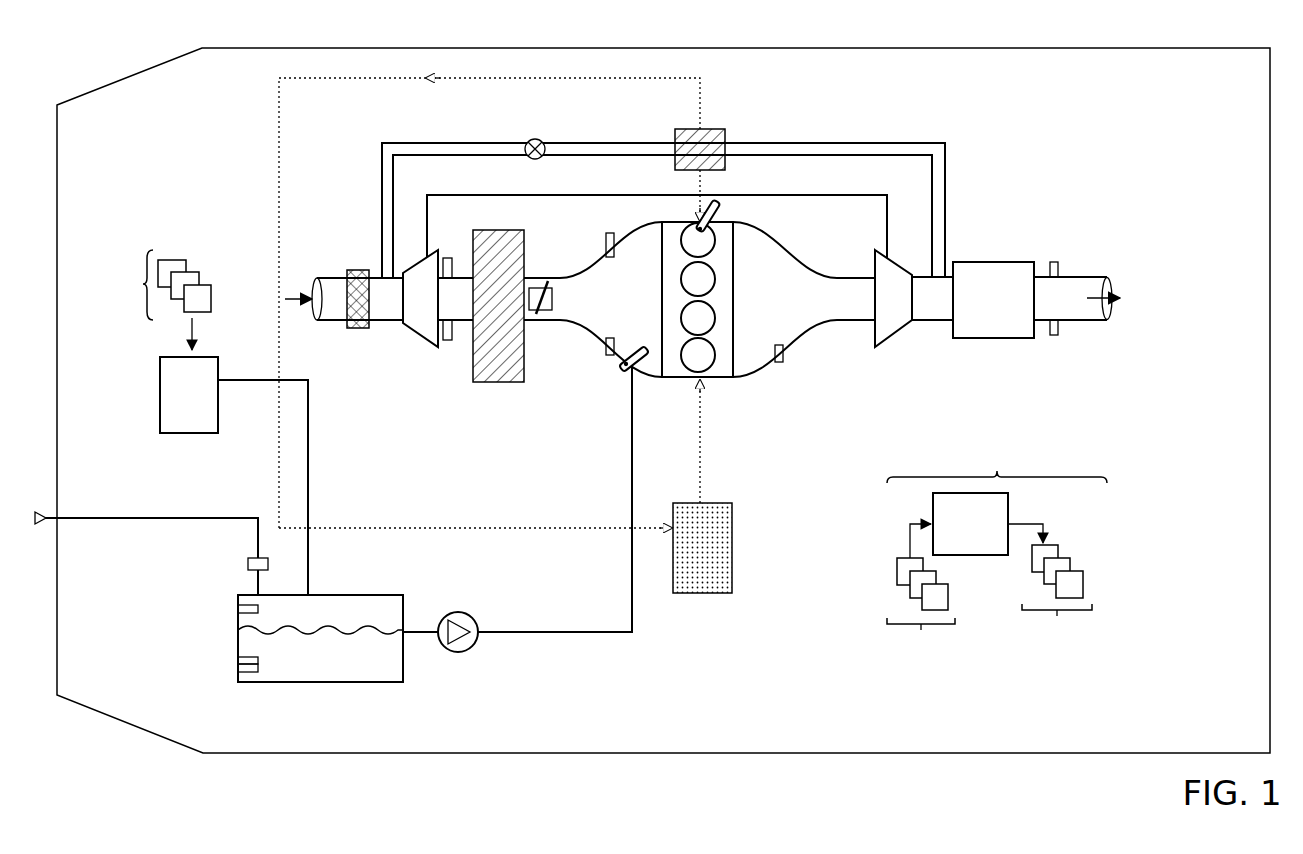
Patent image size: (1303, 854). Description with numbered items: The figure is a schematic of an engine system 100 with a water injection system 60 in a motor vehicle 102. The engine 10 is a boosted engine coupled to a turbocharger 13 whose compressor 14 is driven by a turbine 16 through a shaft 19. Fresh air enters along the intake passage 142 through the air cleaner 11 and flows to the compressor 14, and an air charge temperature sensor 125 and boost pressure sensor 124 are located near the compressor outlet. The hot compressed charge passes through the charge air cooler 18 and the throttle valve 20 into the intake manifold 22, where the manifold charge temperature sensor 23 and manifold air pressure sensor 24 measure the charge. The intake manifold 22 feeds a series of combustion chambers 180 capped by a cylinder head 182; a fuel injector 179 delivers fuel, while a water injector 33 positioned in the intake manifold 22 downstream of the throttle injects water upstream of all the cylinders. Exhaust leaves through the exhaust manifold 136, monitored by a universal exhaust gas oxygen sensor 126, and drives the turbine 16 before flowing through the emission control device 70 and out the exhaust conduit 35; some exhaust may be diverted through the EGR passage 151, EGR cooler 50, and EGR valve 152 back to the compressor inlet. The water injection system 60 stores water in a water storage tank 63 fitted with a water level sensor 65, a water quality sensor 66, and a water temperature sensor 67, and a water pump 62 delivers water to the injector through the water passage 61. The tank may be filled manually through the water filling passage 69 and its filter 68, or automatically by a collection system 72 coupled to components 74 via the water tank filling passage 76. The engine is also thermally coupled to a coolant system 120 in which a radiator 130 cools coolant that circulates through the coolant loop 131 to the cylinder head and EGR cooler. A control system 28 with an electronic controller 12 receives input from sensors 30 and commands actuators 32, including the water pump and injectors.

The engine system 100 is at (1024, 100).
The motor vehicle 102 is at (665, 48).
The engine 10 is at (656, 214).
The air cleaner 11 is at (349, 270).
The controller 12 is at (970, 524).
The turbocharger 13 is at (458, 188).
The compressor 14 is at (438, 298).
The turbine 16 is at (914, 298).
The charge air cooler 18 is at (495, 230).
The shaft 19 is at (815, 197).
The throttle valve 20 is at (552, 300).
The intake manifold 22 is at (593, 299).
The manifold charge temperature sensor 23 is at (606, 240).
The manifold air pressure sensor 24 is at (606, 343).
The control system 28 is at (997, 451).
The sensors 30 is at (925, 598).
The actuators 32 is at (1058, 590).
The water injector 33 is at (622, 370).
The exhaust conduit 35 is at (1092, 277).
The EGR cooler 50 is at (705, 129).
The water injection system 60 is at (437, 712).
The water passage 61 is at (632, 490).
The water pump 62 is at (472, 616).
The water storage tank 63 is at (372, 595).
The water level sensor 65 is at (238, 608).
The water quality sensor 66 is at (238, 660).
The water temperature sensor 67 is at (238, 669).
The filter 68 is at (268, 565).
The water filling passage 69 is at (172, 518).
The emission control device 70 is at (983, 262).
The collection system 72 is at (189, 395).
The components 74 is at (163, 300).
The water tank filling passage 76 is at (308, 472).
The coolant system 120 is at (752, 460).
The boost pressure sensor 124 is at (447, 340).
The air charge temperature sensor 125 is at (447, 258).
The universal exhaust gas oxygen sensor 126 is at (783, 350).
The radiator 130 is at (732, 553).
The coolant loop 131 is at (432, 532).
The exhaust manifold 136 is at (804, 299).
The intake passage 142 is at (322, 326).
The EGR passage 151 is at (838, 143).
The EGR valve 152 is at (541, 141).
The fuel injector 179 is at (718, 200).
The combustion chambers 180 is at (716, 239).
The cylinder head 182 is at (734, 300).